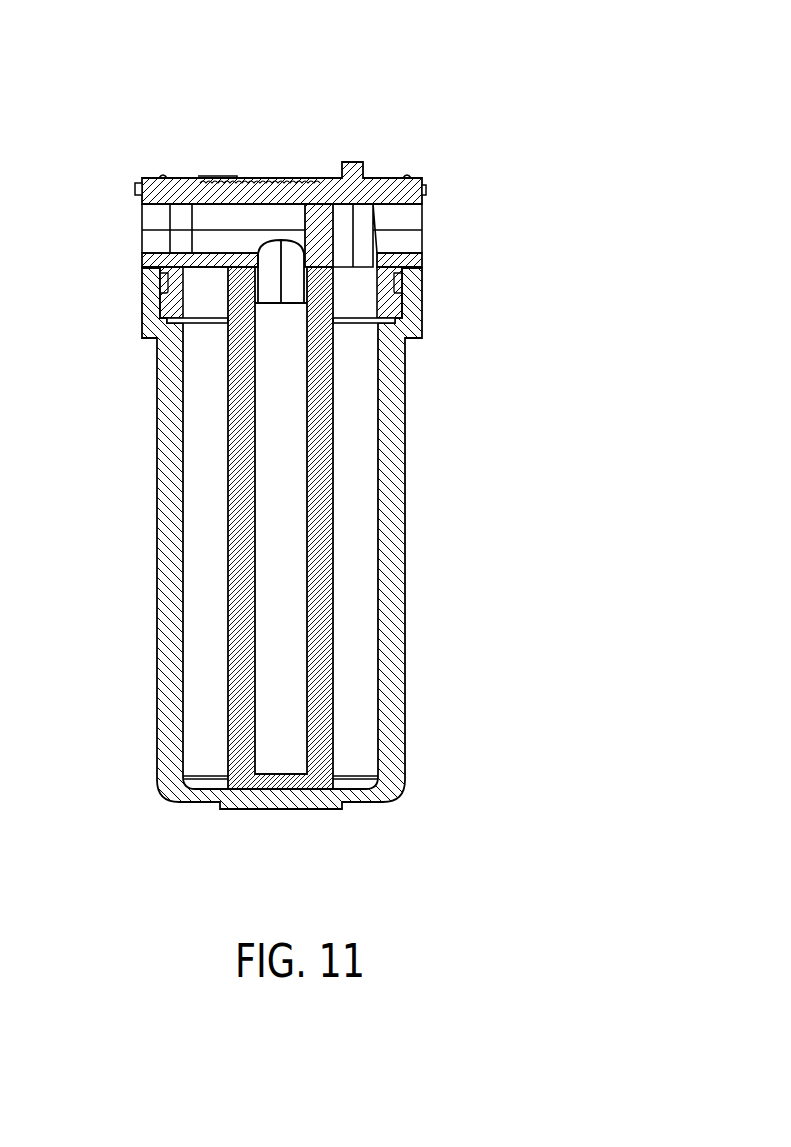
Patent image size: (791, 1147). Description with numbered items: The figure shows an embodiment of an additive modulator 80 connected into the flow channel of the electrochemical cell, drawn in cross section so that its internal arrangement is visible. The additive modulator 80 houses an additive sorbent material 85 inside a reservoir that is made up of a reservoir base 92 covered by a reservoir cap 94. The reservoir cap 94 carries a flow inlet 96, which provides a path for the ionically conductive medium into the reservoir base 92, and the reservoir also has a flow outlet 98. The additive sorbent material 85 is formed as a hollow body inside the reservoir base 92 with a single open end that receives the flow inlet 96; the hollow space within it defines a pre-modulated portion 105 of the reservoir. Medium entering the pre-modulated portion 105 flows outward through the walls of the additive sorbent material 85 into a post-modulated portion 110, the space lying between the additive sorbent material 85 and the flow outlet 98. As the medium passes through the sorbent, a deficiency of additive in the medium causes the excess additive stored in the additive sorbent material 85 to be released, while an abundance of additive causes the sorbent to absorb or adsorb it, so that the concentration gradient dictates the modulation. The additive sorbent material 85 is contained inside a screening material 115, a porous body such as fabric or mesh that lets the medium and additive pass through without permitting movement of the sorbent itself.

The additive modulator 80 is at (386, 100).
The additive sorbent material 85 is at (320, 420).
The reservoir base 92 is at (397, 572).
The reservoir cap 94 is at (190, 186).
The flow inlet 96 is at (147, 213).
The flow outlet 98 is at (408, 220).
The pre-modulated portion 105 is at (272, 733).
The post-modulated portion 110 is at (207, 467).
The screening material 115 is at (307, 615).